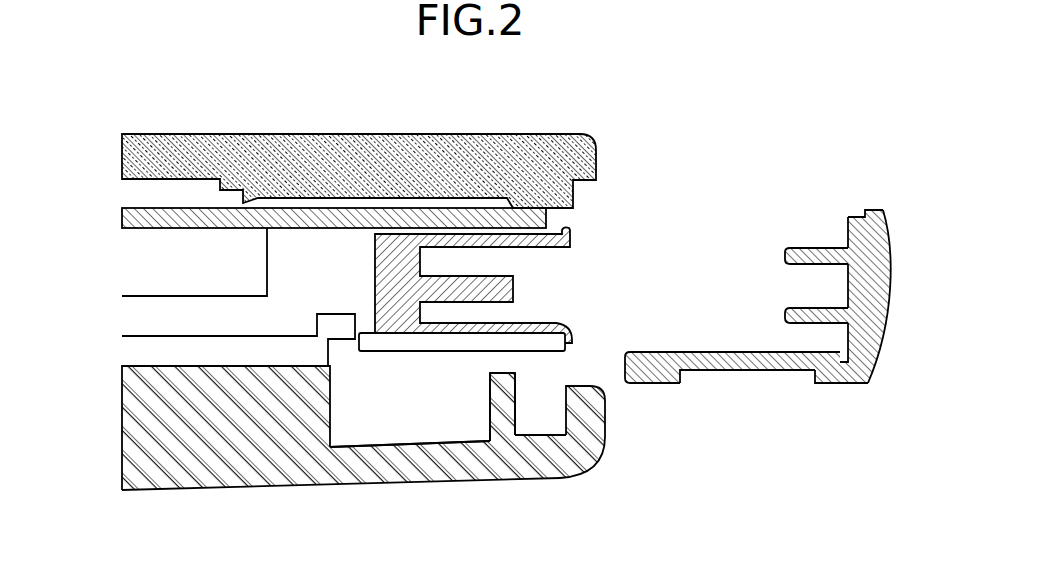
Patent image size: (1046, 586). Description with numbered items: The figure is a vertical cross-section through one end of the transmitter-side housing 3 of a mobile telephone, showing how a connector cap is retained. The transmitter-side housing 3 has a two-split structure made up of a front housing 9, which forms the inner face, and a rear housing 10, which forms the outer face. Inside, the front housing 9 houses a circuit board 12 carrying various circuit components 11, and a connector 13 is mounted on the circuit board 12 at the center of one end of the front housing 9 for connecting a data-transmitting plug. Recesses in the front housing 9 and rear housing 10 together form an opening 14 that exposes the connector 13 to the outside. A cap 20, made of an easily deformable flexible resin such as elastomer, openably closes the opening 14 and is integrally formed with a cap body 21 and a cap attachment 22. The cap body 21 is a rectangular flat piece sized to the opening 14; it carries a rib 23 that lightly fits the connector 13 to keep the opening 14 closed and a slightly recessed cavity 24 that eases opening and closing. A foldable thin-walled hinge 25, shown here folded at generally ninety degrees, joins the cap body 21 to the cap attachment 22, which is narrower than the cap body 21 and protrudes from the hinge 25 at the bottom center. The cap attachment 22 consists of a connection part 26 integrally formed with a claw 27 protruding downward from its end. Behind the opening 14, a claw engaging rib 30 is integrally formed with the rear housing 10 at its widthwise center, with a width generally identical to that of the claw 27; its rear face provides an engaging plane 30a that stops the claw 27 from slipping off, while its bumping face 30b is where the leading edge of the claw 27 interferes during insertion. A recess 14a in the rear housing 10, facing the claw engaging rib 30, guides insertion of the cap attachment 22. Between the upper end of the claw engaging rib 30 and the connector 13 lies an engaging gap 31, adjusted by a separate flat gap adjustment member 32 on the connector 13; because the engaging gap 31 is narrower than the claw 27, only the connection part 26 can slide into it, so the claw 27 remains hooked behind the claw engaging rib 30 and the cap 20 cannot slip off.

The transmitter-side housing 3 is at (181, 495).
The front housing 9 is at (216, 162).
The rear housing 10 is at (235, 473).
The circuit components 11 is at (152, 263).
The circuit board 12 is at (385, 217).
The connector 13 is at (418, 245).
The opening 14 is at (565, 268).
The recess 14a is at (586, 384).
The cap 20 is at (872, 192).
The cap body 21 is at (880, 297).
The cap attachment 22 is at (748, 372).
The rib 23 is at (797, 247).
The cavity 24 is at (872, 210).
The hinge 25 is at (838, 385).
The connection part 26 is at (704, 372).
The claw 27 is at (660, 385).
The claw engaging rib 30 is at (502, 418).
The engaging plane 30a is at (536, 438).
The bumping face 30b is at (534, 438).
The engaging gap 31 is at (502, 356).
The gap adjustment member 32 is at (377, 342).